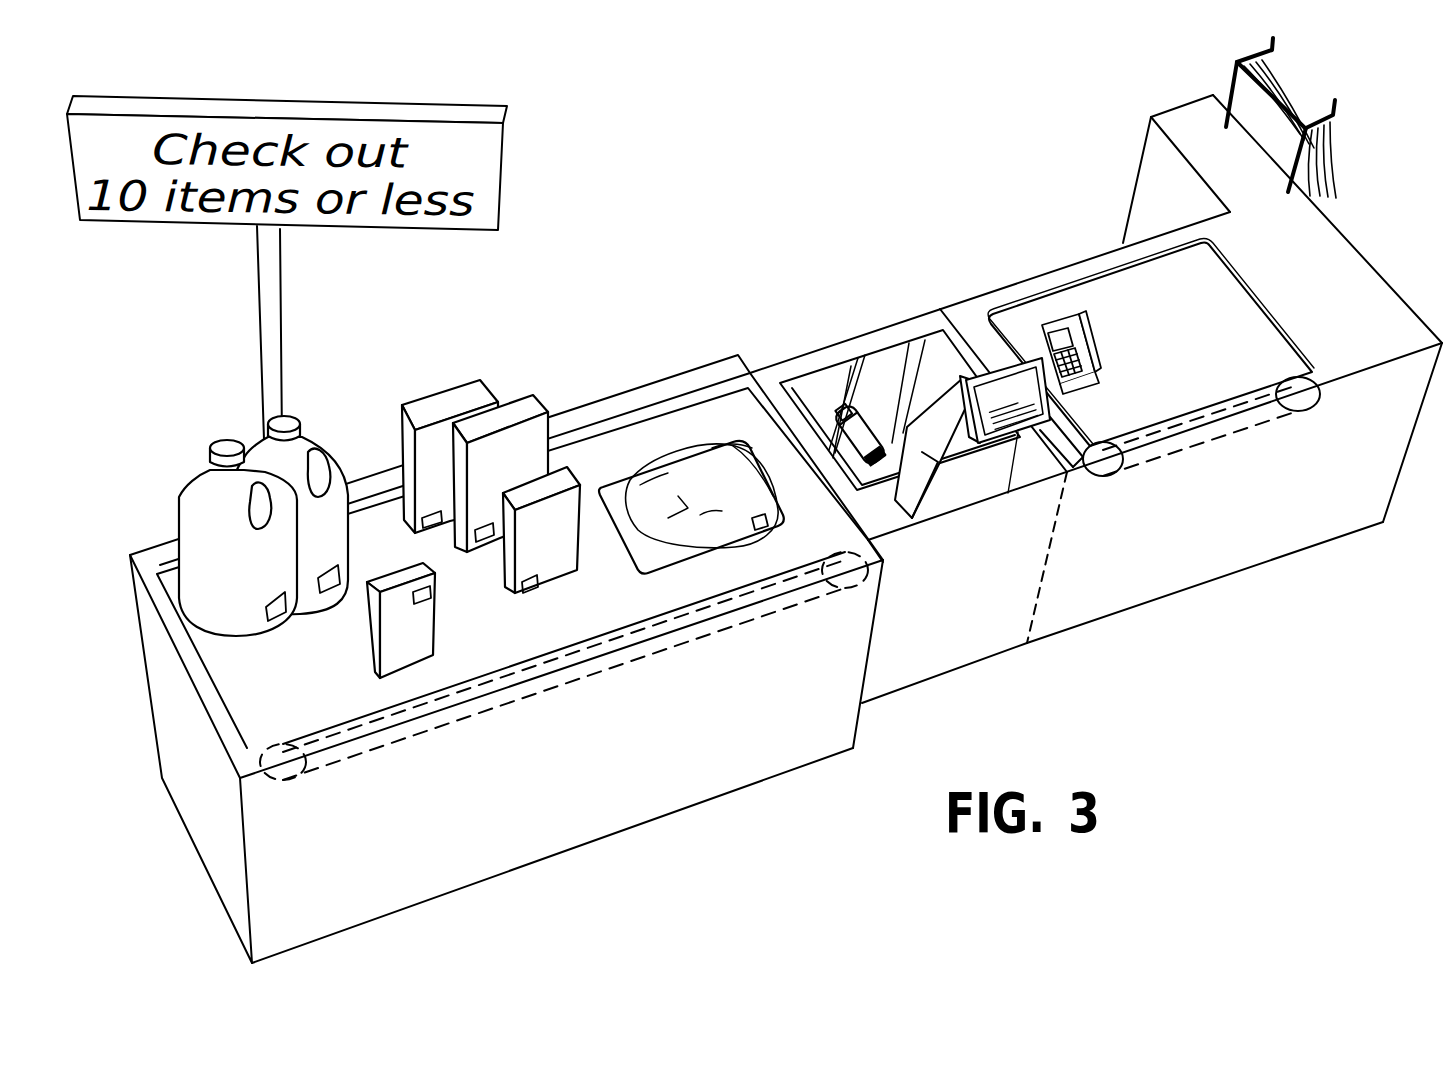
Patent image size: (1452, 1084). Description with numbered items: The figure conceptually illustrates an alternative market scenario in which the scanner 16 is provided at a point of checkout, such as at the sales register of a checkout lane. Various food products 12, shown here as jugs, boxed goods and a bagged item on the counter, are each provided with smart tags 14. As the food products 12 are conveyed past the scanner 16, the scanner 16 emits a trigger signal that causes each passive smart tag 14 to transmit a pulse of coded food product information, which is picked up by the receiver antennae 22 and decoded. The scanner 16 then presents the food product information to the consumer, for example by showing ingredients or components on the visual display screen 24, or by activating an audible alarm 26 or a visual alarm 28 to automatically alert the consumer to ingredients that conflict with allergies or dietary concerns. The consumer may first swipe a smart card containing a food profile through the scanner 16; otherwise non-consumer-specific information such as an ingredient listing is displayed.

The food products 12 is at (198, 498).
The smart tags 14 is at (281, 618).
The scanner 16 is at (840, 412).
The receiver antennae 22 is at (843, 400).
The visual display screen 24 is at (855, 418).
The audible alarm 26 is at (893, 470).
The visual alarm 28 is at (876, 420).